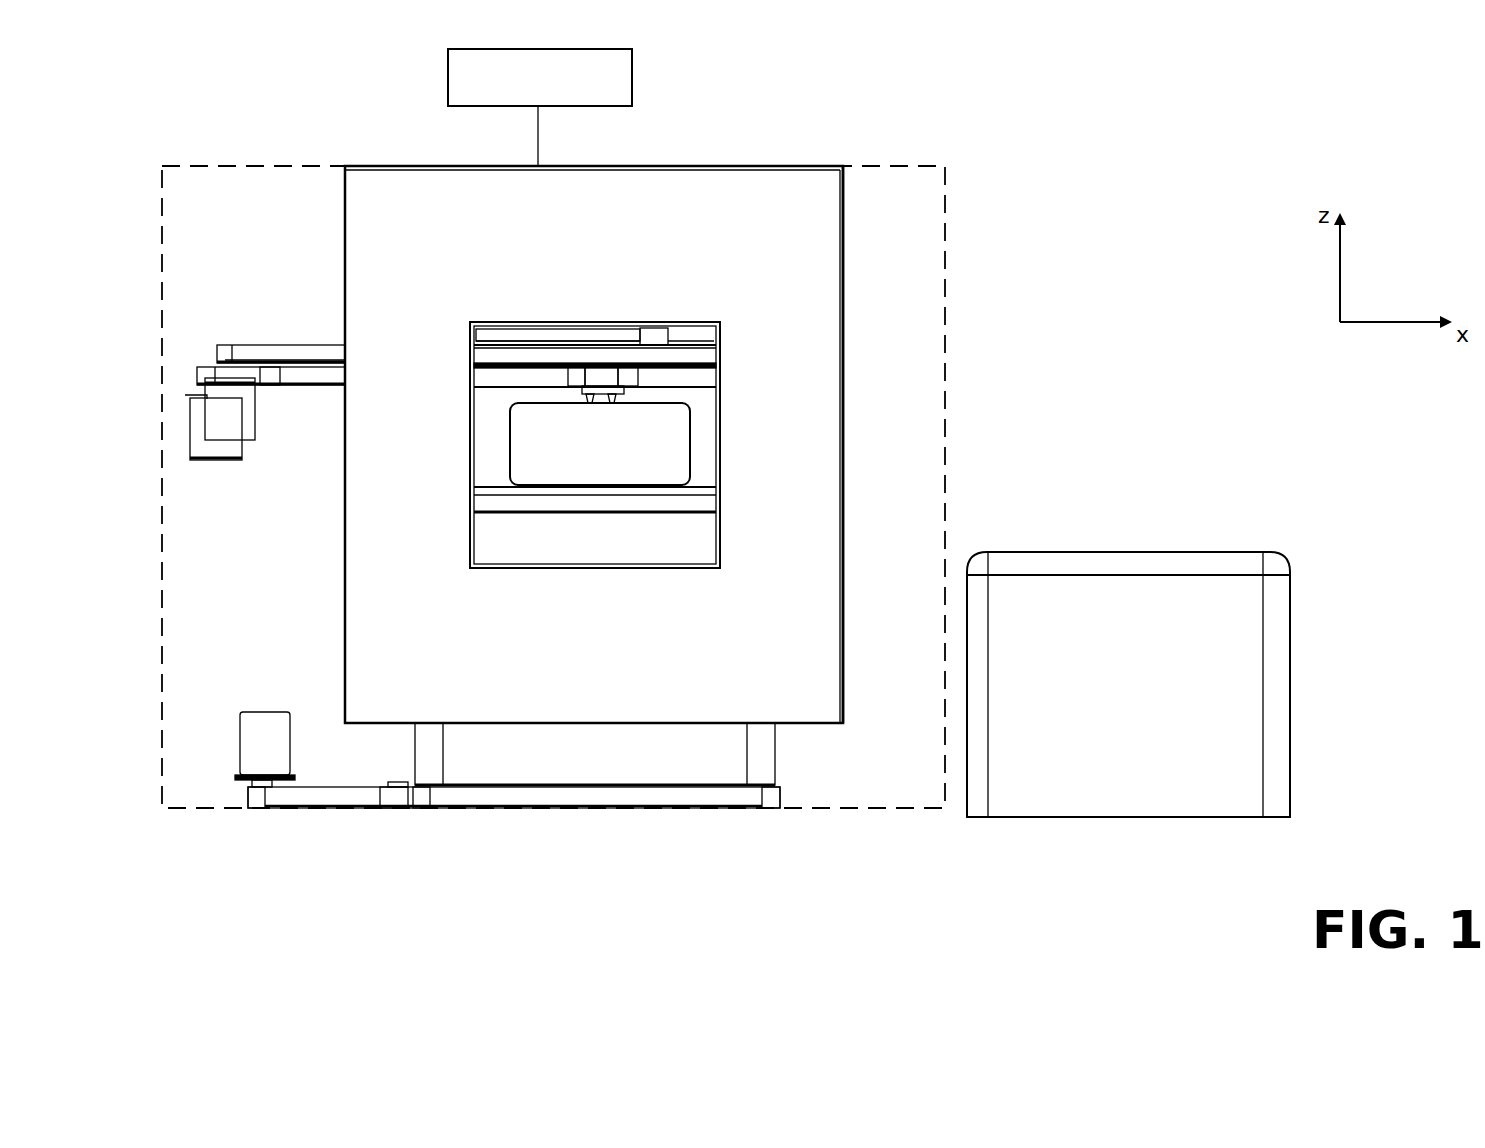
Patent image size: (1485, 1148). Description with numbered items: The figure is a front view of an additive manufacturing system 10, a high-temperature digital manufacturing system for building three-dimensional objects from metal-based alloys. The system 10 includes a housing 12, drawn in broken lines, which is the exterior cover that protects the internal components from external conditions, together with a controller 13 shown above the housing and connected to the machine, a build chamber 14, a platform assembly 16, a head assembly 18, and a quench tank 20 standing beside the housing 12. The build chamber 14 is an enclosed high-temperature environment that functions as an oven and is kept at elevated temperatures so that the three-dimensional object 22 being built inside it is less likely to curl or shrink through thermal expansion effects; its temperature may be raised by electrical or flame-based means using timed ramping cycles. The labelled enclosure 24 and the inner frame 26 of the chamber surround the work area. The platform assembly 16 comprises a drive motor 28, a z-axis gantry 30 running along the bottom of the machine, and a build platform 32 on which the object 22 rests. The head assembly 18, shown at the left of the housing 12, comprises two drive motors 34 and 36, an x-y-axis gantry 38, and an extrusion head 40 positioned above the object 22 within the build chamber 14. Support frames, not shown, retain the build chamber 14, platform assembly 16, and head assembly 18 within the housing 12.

The additive manufacturing system 10 is at (1320, 420).
The housing 12 is at (945, 207).
The controller 13 is at (632, 60).
The build chamber 14 is at (850, 268).
The platform assembly 16 is at (500, 870).
The head assembly 18 is at (142, 347).
The quench tank 20 is at (1283, 635).
The 3D object 22 is at (680, 447).
The enclosure 24 is at (413, 190).
The print head assembly 26 is at (725, 533).
The drive motor 28 is at (250, 740).
The z-axis gantry 30 is at (594, 812).
The build platform 32 is at (512, 500).
The drive motor 34 is at (250, 418).
The drive motor 36 is at (218, 455).
The x-y-axis gantry 38 is at (613, 323).
The extrusion head 40 is at (617, 391).